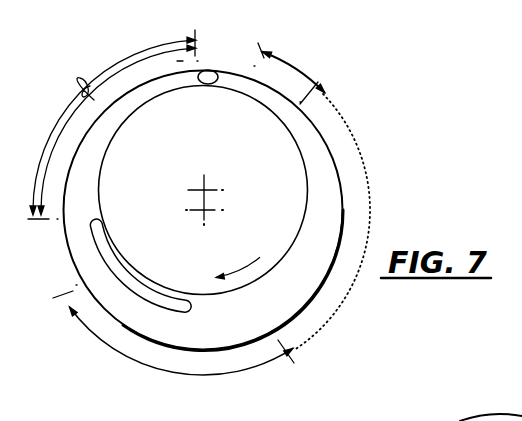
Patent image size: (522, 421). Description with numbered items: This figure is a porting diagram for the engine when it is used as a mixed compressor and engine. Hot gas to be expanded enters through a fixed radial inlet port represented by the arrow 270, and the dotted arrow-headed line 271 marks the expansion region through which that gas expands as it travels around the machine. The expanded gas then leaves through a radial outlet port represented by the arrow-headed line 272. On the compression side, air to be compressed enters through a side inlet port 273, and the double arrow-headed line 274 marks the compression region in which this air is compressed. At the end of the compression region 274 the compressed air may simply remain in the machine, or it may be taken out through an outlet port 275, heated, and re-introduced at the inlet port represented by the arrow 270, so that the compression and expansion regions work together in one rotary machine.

The arrow representing fixed radial inlet port 270 is at (291, 65).
The dotted arrow-headed line representing expansion region 271 is at (352, 138).
The arrow-headed line representing radial outlet port 272 is at (216, 376).
The side inlet port 273 is at (181, 312).
The double arrow-headed line representing compression region 274 is at (61, 126).
The outlet port 275 is at (211, 73).